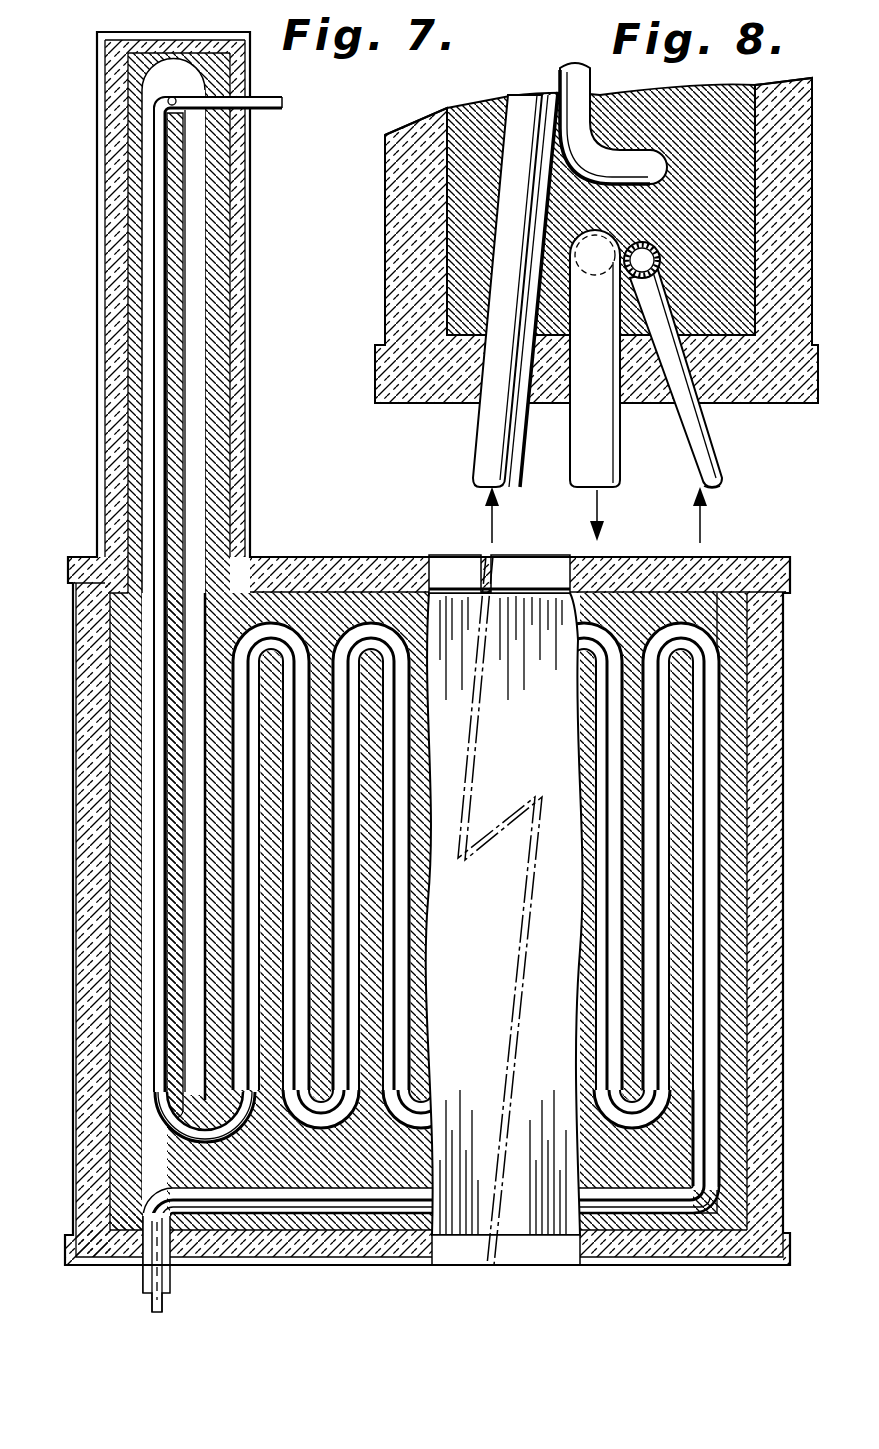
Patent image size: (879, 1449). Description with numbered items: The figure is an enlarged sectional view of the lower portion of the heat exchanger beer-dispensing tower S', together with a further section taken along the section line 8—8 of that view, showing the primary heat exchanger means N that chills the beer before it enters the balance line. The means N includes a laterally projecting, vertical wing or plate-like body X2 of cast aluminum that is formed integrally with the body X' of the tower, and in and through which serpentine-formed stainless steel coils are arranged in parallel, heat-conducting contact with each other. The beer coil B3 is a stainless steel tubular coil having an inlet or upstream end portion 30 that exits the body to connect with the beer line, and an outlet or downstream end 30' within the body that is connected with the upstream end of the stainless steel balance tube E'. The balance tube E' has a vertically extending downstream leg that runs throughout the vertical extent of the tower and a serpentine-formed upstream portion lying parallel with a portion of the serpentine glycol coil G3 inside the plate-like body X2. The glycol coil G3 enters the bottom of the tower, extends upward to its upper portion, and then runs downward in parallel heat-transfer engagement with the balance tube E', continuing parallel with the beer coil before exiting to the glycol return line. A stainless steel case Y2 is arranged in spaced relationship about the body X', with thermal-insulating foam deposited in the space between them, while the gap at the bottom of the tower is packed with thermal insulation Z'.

In FIG. 7, the heat exchanger beer-dispensing tower S' is at (411, 648).
In FIG. 7, the body of the tower X' is at (428, 641).
In FIG. 7, the plate-like body X2 is at (400, 522).
In FIG. 8, the plate-like body X2 is at (455, 203).
In FIG. 8, the stainless steel case Y2 is at (383, 283).
In FIG. 8, the thermal insulation Z' is at (590, 210).
In FIG. 7, the balance tube E' is at (161, 645).
In FIG. 8, the balance tube E' is at (586, 254).
In FIG. 7, the glycol coil G3 is at (209, 443).
In FIG. 8, the glycol coil G3 is at (477, 451).
In FIG. 7, the beer coil B3 is at (360, 1196).
In FIG. 8, the beer coil B3 is at (724, 444).
In FIG. 7, the primary heat exchanger means N is at (792, 506).
In FIG. 7, the section line 8— 8 is at (160, 1100).
In FIG. 7, the inlet or upstream end portion of the beer coil 30 is at (206, 1262).
In FIG. 8, the inlet or upstream end portion of the beer coil 30 is at (756, 473).
In FIG. 7, the outlet or downstream end of the beer coil 30' is at (389, 1057).